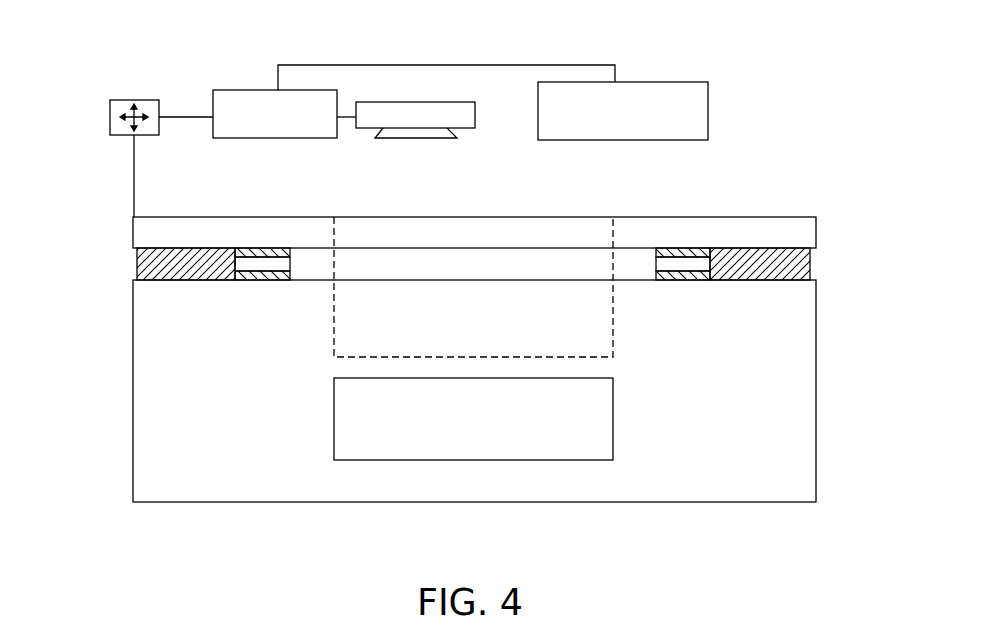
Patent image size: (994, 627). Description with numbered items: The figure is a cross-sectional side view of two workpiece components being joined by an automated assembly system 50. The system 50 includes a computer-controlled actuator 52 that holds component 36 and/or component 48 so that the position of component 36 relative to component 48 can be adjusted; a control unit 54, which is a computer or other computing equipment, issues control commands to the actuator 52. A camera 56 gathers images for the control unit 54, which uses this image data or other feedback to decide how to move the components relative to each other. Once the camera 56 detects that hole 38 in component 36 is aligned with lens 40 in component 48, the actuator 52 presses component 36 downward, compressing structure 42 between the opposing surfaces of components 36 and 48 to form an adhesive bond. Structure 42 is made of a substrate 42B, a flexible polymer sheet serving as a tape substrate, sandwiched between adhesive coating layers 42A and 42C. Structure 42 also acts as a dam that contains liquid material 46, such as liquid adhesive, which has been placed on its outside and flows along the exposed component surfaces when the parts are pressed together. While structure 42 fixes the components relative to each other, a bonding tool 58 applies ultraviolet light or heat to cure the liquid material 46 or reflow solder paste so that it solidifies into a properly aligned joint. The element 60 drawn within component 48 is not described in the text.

The component 36 is at (745, 228).
The hole 38 is at (613, 217).
The lens 40 is at (613, 345).
The structure 42 is at (472, 265).
The adhesive coating layer 42A is at (292, 249).
The substrate 42B is at (290, 262).
The adhesive coating layer 42C is at (290, 280).
The liquid material 46 is at (136, 262).
The component 48 is at (795, 418).
The automated assembly system 50 is at (92, 42).
The actuator 52 is at (143, 100).
The control unit 54 is at (246, 90).
The camera 56 is at (475, 113).
The bonding tool 58 is at (708, 118).
The heater 60 is at (607, 418).